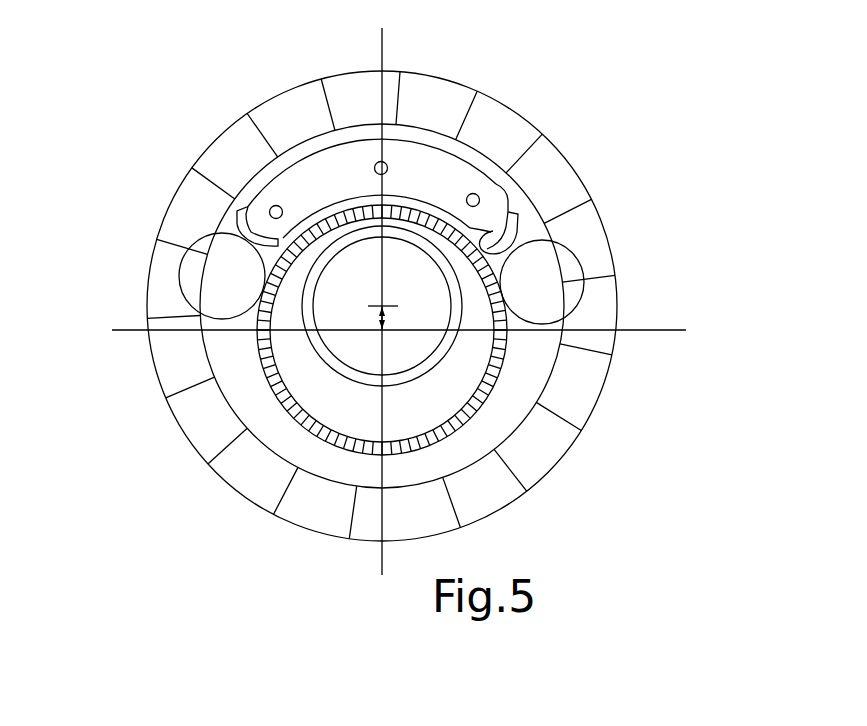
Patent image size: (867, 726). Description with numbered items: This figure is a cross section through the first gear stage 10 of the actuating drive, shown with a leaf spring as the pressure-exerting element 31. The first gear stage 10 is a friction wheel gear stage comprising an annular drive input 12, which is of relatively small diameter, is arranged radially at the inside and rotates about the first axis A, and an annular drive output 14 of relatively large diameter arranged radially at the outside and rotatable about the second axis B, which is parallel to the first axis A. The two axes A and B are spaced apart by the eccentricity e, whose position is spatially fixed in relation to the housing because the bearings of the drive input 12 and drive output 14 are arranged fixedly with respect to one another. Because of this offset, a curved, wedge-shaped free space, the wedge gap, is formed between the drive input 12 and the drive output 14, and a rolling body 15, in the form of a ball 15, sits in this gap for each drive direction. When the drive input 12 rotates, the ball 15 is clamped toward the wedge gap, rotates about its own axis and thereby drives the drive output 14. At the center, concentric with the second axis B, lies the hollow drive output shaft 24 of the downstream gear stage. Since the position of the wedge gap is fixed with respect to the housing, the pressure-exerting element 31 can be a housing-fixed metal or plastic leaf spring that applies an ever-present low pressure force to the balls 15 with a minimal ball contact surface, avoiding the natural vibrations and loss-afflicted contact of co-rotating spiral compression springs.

The first gear stage 10 is at (288, 73).
The drive input 12 is at (340, 363).
The drive output 14 is at (578, 388).
The rolling body 15 is at (232, 263).
The drive output shaft 24 is at (422, 370).
The pressure-exerting element 31 is at (452, 172).
The first axis A is at (380, 332).
The second axis B is at (378, 306).
The eccentricity e is at (398, 319).